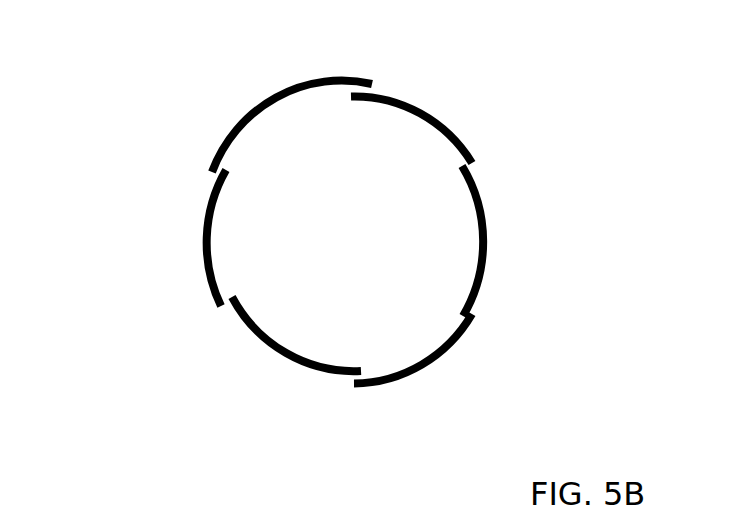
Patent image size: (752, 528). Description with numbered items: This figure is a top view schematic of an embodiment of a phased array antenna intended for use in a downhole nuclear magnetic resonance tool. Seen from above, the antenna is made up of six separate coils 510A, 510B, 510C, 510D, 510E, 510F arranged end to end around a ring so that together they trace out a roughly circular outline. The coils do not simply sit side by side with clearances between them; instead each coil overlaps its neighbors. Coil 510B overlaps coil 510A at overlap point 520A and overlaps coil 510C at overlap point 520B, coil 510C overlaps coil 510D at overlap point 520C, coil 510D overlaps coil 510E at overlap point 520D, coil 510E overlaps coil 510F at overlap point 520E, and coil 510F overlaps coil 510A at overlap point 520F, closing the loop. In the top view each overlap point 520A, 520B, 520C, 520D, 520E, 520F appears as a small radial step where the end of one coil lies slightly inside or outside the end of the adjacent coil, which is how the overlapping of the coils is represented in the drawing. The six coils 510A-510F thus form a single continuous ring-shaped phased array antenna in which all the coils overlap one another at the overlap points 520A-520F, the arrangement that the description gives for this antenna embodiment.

The coil 510A is at (143, 238).
The coil 510B is at (249, 108).
The coil 510C is at (458, 109).
The coil 510D is at (545, 241).
The coil 510E is at (460, 371).
The coil 510F is at (259, 364).
The overlap point 520A is at (283, 169).
The overlap point 520B is at (432, 49).
The overlap point 520C is at (548, 136).
The overlap point 520D is at (400, 305).
The overlap point 520E is at (412, 421).
The overlap point 520F is at (278, 265).